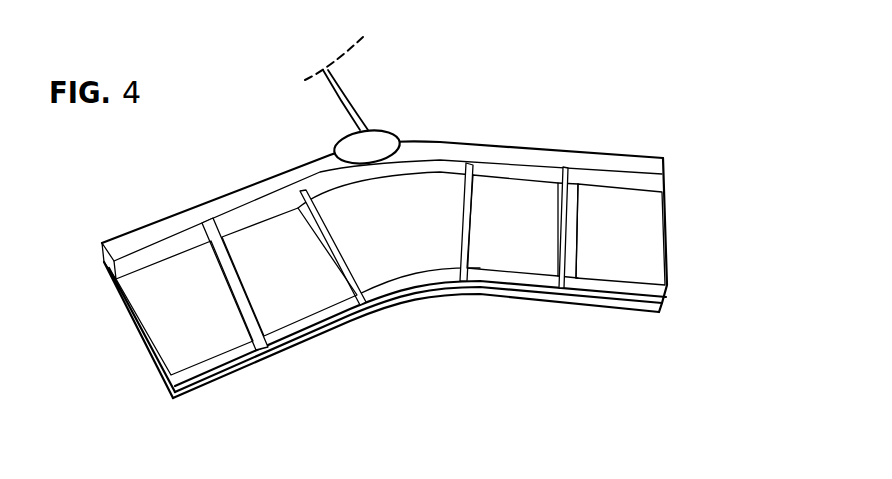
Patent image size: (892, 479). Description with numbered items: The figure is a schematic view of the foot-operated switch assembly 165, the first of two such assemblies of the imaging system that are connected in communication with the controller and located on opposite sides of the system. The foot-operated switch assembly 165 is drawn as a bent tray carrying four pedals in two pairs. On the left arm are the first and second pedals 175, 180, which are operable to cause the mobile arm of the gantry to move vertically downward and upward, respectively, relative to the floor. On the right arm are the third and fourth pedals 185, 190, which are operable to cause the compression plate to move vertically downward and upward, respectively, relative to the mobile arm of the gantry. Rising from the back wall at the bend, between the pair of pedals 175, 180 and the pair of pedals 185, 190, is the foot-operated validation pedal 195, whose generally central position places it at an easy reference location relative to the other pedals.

The foot-operated switch assembly 165 is at (497, 94).
The first pedal 175 is at (163, 323).
The second pedal 180 is at (283, 252).
The third pedal 185 is at (515, 218).
The fourth pedal 190 is at (647, 233).
The foot-operated validation pedal 195 is at (375, 138).